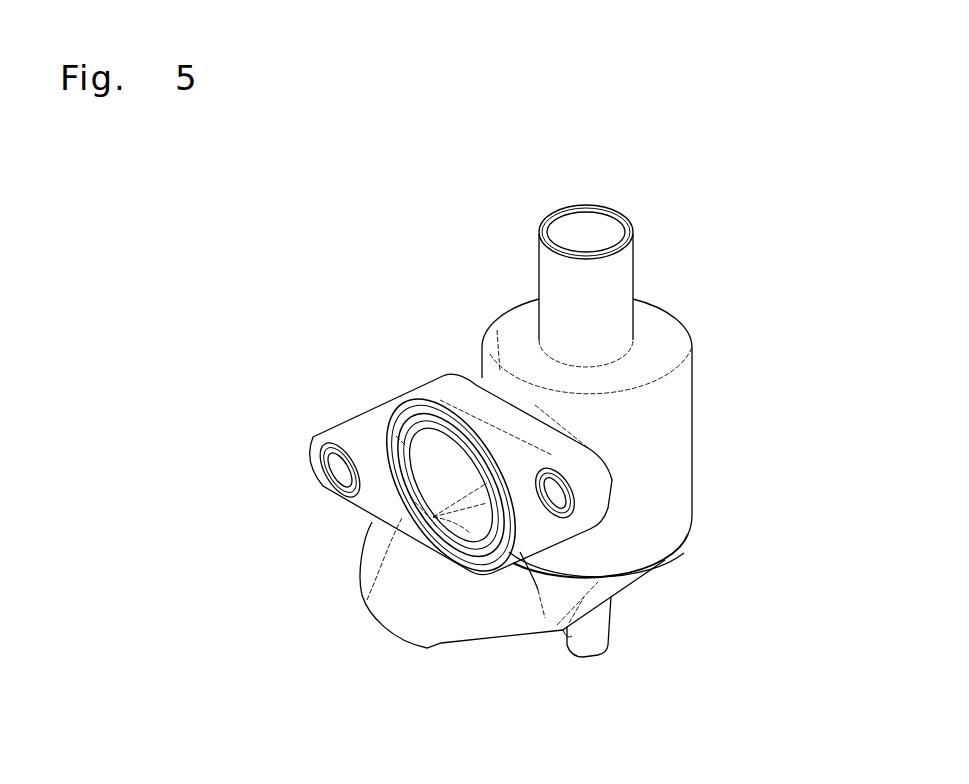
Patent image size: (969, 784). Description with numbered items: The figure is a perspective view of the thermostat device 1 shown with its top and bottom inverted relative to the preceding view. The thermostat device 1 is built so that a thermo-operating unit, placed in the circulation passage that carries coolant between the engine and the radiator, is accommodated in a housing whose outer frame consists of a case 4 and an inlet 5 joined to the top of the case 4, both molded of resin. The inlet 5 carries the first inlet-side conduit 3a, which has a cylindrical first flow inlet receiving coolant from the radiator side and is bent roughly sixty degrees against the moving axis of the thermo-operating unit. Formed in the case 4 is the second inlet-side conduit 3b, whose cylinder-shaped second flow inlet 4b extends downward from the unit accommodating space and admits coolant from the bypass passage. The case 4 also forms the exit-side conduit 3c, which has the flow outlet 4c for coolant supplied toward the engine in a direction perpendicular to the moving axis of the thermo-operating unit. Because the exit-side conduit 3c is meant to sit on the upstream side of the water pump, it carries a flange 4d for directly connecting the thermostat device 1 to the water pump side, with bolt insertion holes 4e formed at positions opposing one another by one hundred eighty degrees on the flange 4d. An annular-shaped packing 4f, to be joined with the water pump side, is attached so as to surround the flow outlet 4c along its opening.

The thermostat device 1 is at (726, 260).
The first inlet-side conduit 3a is at (377, 623).
The second inlet-side conduit 3b is at (600, 206).
The exit-side conduit 3c is at (393, 433).
The case 4 is at (672, 434).
The second flow inlet 4b is at (577, 233).
The flow outlet 4c is at (367, 600).
The flange 4d is at (362, 505).
The bolt insertion holes 4e is at (322, 478).
The annular-shaped packing 4f is at (431, 545).
The inlet 5 is at (493, 632).